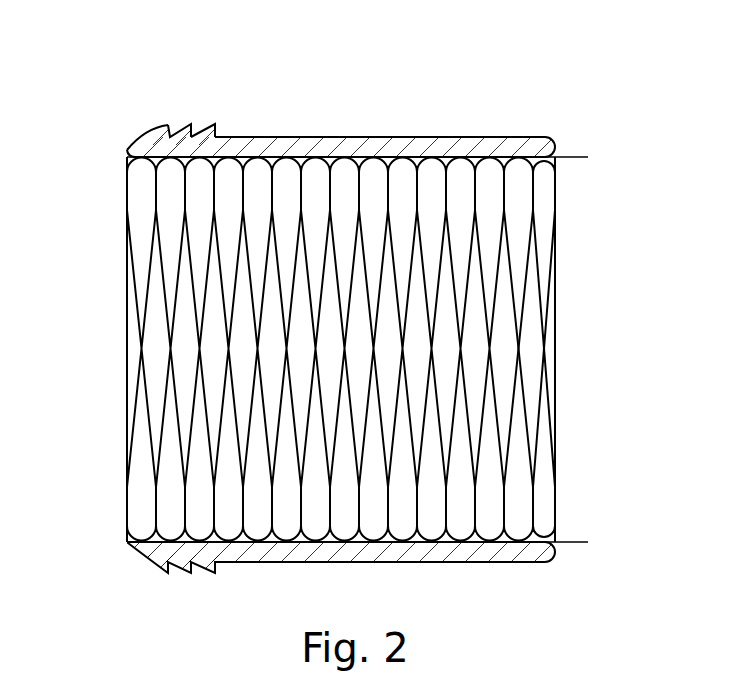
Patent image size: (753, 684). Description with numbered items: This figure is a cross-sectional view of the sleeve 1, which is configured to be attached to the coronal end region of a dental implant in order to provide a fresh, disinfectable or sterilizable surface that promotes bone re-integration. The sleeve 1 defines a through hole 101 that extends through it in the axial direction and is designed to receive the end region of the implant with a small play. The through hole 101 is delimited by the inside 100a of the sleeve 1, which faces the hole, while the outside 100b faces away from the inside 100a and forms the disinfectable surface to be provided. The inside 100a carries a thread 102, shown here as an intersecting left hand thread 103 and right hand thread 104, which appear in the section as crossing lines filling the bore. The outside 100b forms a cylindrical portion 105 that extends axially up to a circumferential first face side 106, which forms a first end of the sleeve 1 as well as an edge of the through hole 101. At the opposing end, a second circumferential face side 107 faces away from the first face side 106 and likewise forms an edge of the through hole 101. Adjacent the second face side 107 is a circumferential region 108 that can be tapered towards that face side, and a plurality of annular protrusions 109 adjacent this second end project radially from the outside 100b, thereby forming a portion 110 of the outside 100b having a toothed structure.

The sleeve 1 is at (410, 130).
The inside 100a is at (345, 157).
The outside 100b is at (425, 562).
The through hole 101 is at (550, 508).
The thread 102 is at (540, 220).
The left hand thread 103 is at (530, 263).
The right hand thread 104 is at (544, 348).
The cylindrical portion 105 is at (505, 138).
The first face side 106 is at (557, 355).
The second face side 107 is at (127, 365).
The circumferential region 108 is at (142, 138).
The annular protrusions 109 is at (192, 136).
The portion having a toothed structure 110 is at (209, 121).